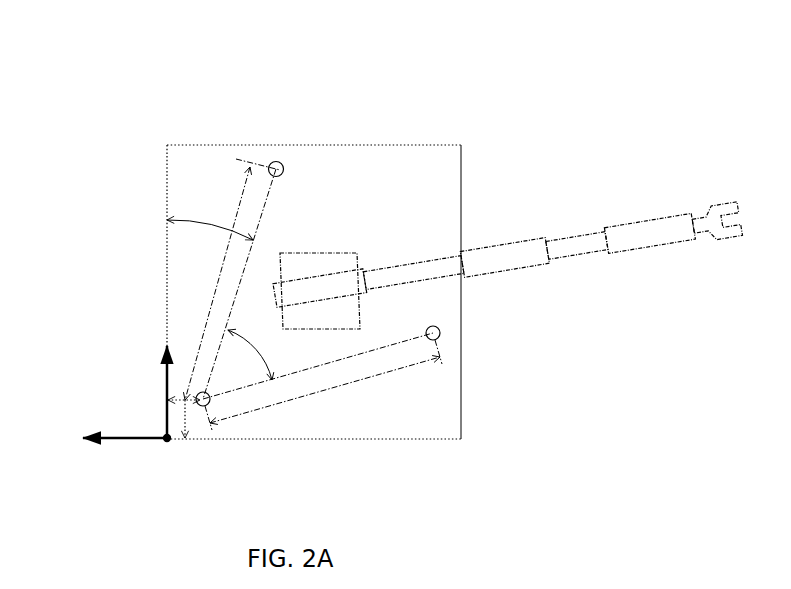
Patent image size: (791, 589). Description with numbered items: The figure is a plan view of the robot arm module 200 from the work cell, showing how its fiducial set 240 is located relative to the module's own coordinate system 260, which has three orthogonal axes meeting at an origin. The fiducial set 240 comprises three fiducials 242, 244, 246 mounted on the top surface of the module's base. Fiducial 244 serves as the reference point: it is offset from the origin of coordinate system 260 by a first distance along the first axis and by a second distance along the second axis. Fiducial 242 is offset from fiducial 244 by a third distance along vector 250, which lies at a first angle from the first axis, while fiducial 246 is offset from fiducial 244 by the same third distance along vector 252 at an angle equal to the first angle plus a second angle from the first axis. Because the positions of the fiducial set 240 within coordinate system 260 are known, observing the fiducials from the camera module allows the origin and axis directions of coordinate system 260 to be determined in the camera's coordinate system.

The robot arm module 200 is at (145, 183).
The fiducial set 240 is at (227, 65).
The fiducial 242 is at (273, 158).
The fiducial 244 is at (215, 404).
The fiducial 246 is at (446, 333).
The vector 250 is at (266, 218).
The vector 252 is at (377, 353).
The coordinate system 260 is at (120, 388).